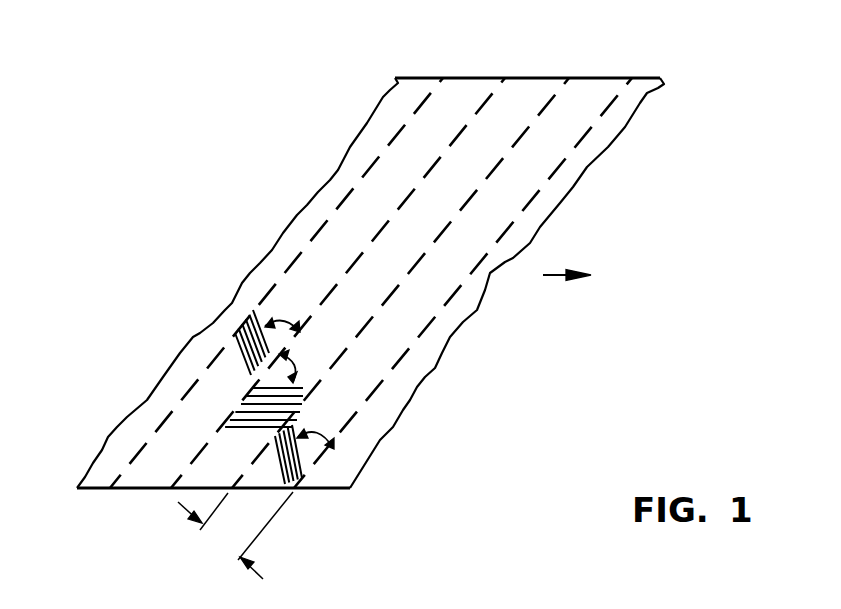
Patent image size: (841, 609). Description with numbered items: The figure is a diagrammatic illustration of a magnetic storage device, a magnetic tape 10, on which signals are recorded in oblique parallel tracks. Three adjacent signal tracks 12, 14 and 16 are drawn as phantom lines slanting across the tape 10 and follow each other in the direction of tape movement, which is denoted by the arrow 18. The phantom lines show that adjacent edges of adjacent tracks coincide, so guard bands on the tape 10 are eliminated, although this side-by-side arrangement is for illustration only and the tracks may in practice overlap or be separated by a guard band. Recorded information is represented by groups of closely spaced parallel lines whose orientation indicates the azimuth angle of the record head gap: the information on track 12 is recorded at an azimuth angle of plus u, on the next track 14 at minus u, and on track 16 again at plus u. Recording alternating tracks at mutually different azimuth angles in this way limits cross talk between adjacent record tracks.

The magnetic tape 10 is at (381, 440).
The signal track 12 is at (597, 97).
The signal track 14 is at (548, 90).
The signal track 16 is at (467, 90).
The arrow 18 is at (557, 278).